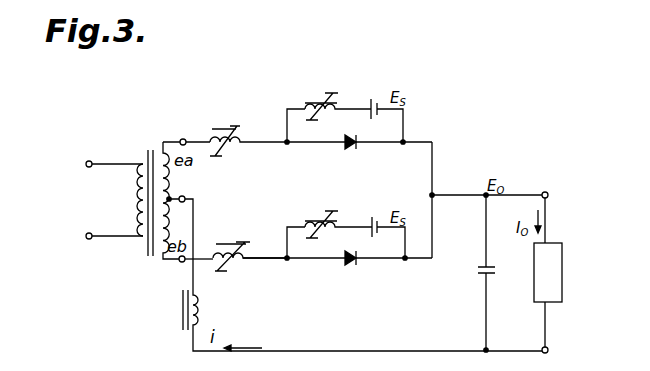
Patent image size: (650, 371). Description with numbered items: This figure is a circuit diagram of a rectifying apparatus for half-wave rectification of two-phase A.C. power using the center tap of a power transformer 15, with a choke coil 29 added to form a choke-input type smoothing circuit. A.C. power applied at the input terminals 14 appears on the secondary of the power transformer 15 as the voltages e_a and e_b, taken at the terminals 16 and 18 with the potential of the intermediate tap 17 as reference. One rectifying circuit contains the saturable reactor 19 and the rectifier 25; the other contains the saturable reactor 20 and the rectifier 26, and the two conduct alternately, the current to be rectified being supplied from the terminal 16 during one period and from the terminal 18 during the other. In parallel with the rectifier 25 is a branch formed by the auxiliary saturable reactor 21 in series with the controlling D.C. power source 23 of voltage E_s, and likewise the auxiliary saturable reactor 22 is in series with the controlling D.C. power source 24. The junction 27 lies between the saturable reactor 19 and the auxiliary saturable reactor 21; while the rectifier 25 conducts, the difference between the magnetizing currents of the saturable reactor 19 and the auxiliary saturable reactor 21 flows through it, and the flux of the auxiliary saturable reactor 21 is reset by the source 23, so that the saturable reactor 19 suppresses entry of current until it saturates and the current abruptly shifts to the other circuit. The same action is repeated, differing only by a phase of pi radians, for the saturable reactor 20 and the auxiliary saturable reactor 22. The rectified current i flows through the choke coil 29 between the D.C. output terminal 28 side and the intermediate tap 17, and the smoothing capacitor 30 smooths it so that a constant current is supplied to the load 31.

The input terminals 14 is at (96, 201).
The power transformer 15 is at (147, 150).
The terminal 16 is at (183, 139).
The intermediate tap 17 is at (184, 196).
The terminal 18 is at (179, 262).
The saturable reactor 19 is at (224, 131).
The saturable reactor 20 is at (228, 250).
The auxiliary saturable reactor 21 is at (318, 101).
The auxiliary saturable reactor 22 is at (320, 219).
The controlling D.C. power source 23 is at (371, 99).
The bias voltage source 24 is at (374, 219).
The rectifier 25 is at (353, 150).
The rectifier 26 is at (350, 266).
The junction 27 is at (286, 144).
The D.C. output terminal 28 is at (435, 193).
The choke coil 29 is at (181, 326).
The smoothing capacitor 30 is at (479, 268).
The load 31 is at (563, 266).